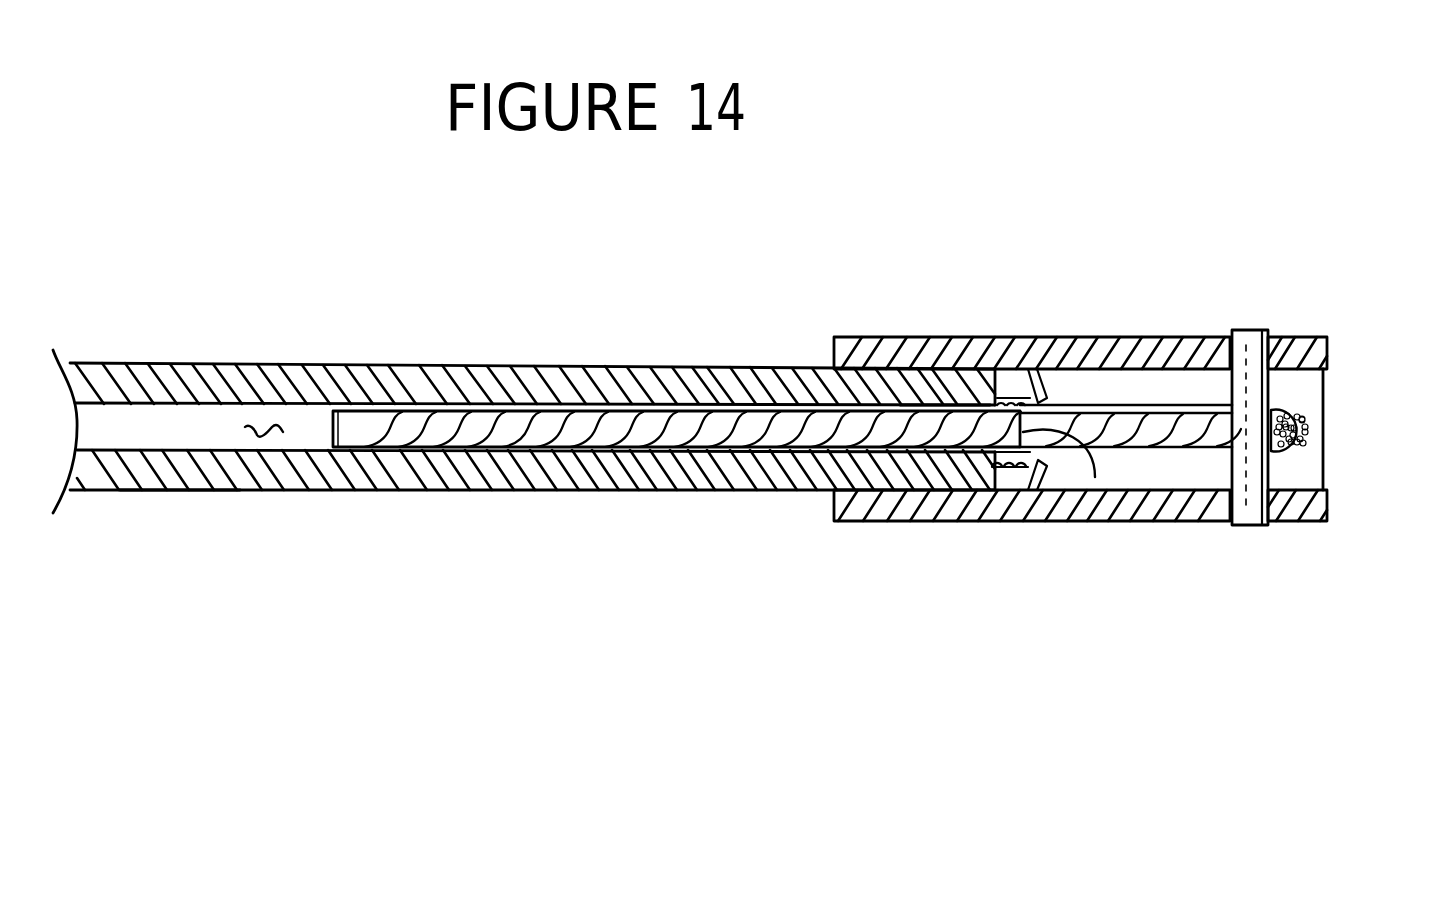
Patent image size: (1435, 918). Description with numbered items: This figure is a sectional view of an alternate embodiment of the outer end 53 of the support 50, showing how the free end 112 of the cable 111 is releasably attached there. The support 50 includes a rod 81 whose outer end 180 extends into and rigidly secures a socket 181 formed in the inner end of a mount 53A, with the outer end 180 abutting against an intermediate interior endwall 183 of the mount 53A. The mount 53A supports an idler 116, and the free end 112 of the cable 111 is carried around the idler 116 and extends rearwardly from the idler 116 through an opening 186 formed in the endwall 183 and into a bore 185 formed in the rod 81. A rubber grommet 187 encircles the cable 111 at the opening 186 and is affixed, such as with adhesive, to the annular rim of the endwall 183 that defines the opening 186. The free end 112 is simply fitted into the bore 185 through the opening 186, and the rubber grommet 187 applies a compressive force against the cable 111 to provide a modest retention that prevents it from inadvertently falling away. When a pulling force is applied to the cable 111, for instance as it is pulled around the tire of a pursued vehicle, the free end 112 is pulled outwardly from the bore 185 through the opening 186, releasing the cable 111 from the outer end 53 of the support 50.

The support 50 is at (240, 366).
The rod 81 is at (170, 478).
The bore 185 is at (273, 425).
The free end of cable 112 is at (630, 411).
The cable 111 is at (1182, 445).
The outer end of rod 180 is at (950, 395).
The intermediate interior endwall 183 is at (1008, 385).
The rubber grommet 187 is at (1045, 390).
The socket 181 is at (910, 378).
The opening 186 is at (1095, 477).
The mount 53A is at (1192, 345).
The outer end of support 53 is at (1320, 336).
The idler 116 is at (1257, 390).